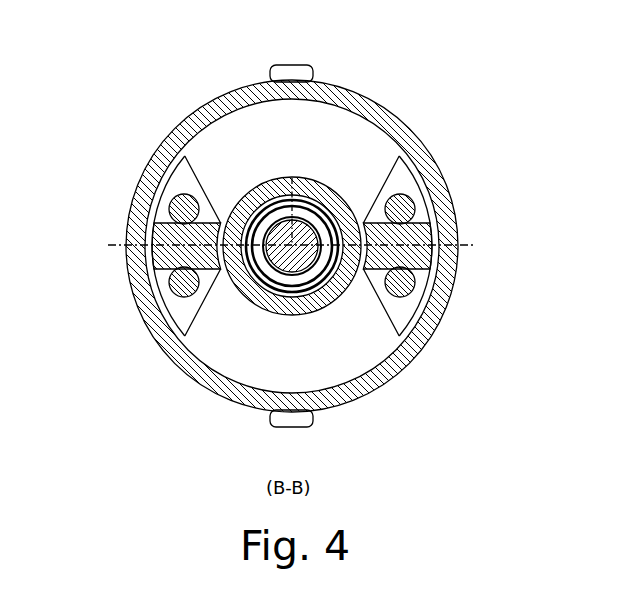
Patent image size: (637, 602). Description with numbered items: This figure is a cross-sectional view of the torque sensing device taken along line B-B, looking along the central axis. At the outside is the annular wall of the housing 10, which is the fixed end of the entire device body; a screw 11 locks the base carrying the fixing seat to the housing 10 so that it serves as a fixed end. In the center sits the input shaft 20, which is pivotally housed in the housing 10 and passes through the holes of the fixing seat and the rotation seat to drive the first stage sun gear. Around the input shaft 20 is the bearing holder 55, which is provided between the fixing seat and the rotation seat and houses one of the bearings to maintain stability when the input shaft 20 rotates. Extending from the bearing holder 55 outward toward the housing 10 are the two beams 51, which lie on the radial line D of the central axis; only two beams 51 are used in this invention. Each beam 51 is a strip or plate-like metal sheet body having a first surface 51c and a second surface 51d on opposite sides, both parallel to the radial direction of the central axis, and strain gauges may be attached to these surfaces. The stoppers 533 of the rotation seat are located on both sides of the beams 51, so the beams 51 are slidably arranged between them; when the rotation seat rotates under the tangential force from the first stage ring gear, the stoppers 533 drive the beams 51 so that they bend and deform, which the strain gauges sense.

The housing 10 is at (397, 368).
The screw 11 is at (290, 64).
The input shaft 20 is at (294, 177).
The beam 51 is at (290, 271).
The first surface 51c is at (152, 203).
The second surface 51d is at (145, 312).
The stopper 533 is at (413, 196).
The bearing holder 55 is at (250, 296).
The radial line D is at (463, 245).